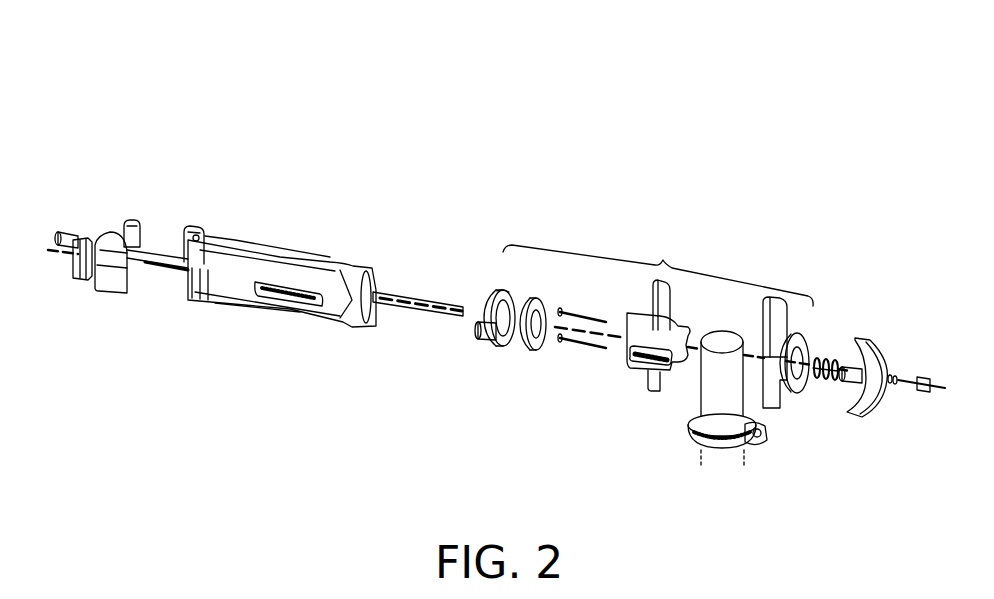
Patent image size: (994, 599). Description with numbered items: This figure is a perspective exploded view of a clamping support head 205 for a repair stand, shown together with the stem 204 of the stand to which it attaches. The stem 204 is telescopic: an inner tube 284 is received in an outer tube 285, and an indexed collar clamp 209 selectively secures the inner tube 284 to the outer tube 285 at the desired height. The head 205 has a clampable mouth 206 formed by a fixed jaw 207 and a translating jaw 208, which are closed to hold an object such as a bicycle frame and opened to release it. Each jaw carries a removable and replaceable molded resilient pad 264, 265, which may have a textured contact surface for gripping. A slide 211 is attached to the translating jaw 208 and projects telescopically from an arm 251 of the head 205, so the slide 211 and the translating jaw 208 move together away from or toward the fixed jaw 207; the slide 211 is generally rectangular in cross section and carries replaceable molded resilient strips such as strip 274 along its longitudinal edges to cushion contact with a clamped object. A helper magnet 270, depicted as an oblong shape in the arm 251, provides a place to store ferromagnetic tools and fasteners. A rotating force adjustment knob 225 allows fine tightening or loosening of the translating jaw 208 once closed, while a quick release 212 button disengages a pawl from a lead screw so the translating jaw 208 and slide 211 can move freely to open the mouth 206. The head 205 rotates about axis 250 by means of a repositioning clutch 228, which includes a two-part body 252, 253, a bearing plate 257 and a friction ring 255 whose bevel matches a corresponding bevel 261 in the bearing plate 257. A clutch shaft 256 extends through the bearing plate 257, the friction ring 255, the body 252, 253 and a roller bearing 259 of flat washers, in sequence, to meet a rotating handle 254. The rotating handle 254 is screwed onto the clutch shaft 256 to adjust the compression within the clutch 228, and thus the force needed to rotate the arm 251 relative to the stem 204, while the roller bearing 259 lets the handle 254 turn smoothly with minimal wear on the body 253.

The stem 204 is at (636, 434).
The clamping support head 205 is at (483, 114).
The clampable mouth 206 is at (165, 222).
The fixed jaw 207 is at (197, 233).
The translating jaw 208 is at (125, 225).
The indexed collar clamp 209 is at (690, 410).
The slide 211 is at (153, 280).
The quick release 212 is at (232, 235).
The rotating force adjustment knob 225 is at (78, 280).
The repositioning clutch 228 is at (684, 252).
The axis 250 is at (485, 316).
The arm 251 is at (249, 310).
The body 252 is at (638, 362).
The body 253 is at (777, 396).
The rotating handle 254 is at (857, 413).
The friction ring 255 is at (532, 344).
The clutch shaft 256 is at (400, 310).
The bearing plate 257 is at (494, 292).
The roller bearing 259 is at (845, 340).
The bevel 261 is at (502, 338).
The molded resilient pad 264 is at (195, 232).
The molded resilient pad 265 is at (130, 220).
The helper magnet 270 is at (283, 307).
The molded resilient strip 274 is at (166, 273).
The inner tube 284 is at (720, 385).
The outer tube 285 is at (720, 458).